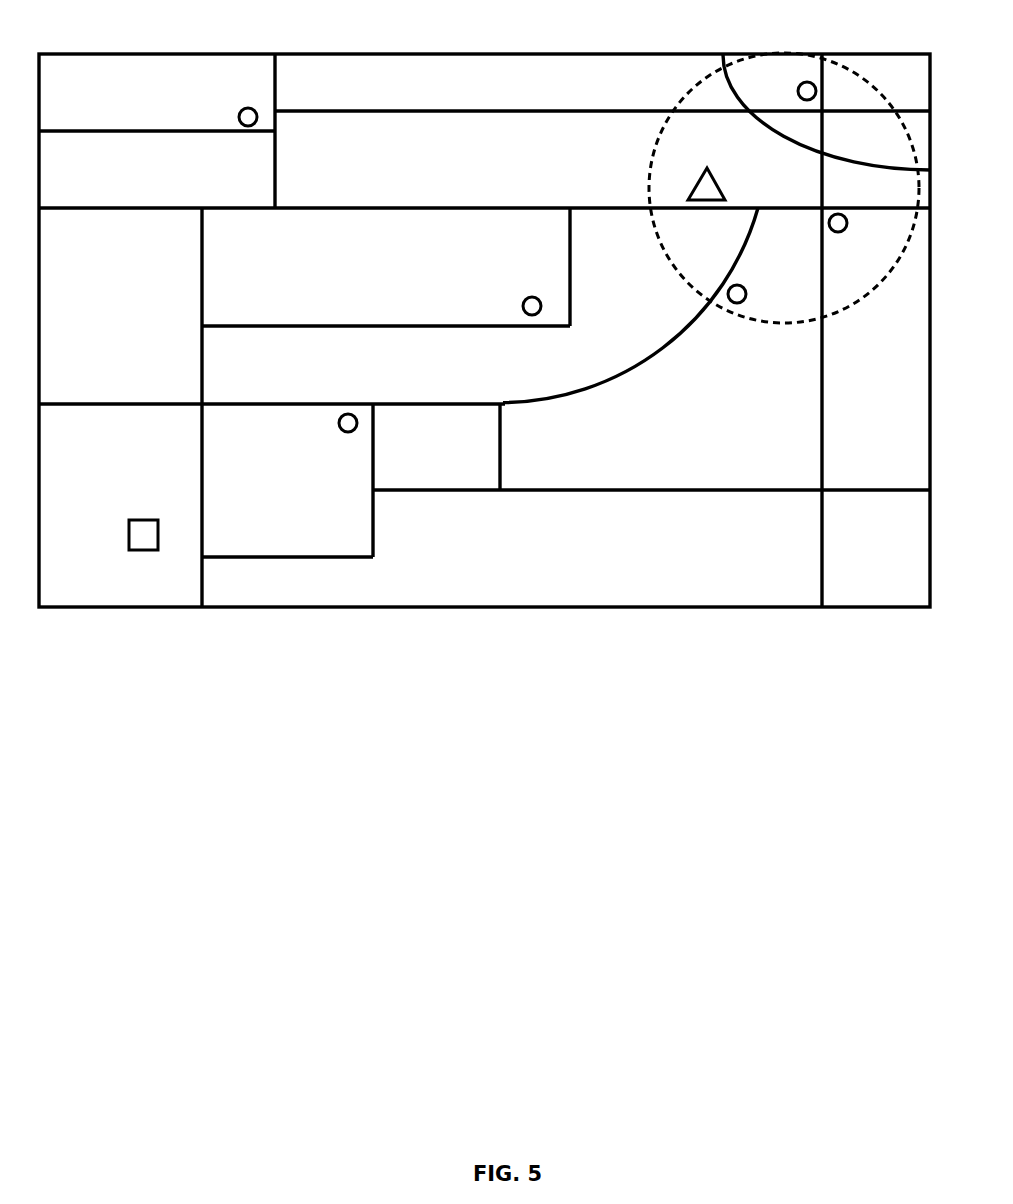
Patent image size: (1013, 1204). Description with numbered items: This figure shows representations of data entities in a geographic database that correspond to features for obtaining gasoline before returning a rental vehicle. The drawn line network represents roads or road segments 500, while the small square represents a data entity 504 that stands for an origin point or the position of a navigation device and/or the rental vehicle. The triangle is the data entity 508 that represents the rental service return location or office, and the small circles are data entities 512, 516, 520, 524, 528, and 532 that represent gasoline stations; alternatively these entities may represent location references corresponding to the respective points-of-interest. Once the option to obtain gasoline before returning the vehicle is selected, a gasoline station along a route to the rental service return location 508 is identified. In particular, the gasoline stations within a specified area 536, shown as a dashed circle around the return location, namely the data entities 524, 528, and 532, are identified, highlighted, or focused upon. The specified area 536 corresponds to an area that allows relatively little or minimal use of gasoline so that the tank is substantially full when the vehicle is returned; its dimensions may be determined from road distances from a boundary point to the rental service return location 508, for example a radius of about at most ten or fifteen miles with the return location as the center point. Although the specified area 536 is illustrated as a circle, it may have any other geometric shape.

The road segments 500 is at (531, 53).
The data entity representing an origin point 504 is at (141, 519).
The data entity representing a rental service return location 508 is at (707, 168).
The data entity representing a gasoline station 512 is at (338, 424).
The data entity representing a gasoline station 516 is at (245, 108).
The data entity representing a gasoline station 520 is at (523, 305).
The data entity representing a gasoline station 524 is at (746, 294).
The data entity representing a gasoline station 528 is at (829, 223).
The data entity representing a gasoline station 532 is at (803, 83).
The specified area 536 is at (656, 150).